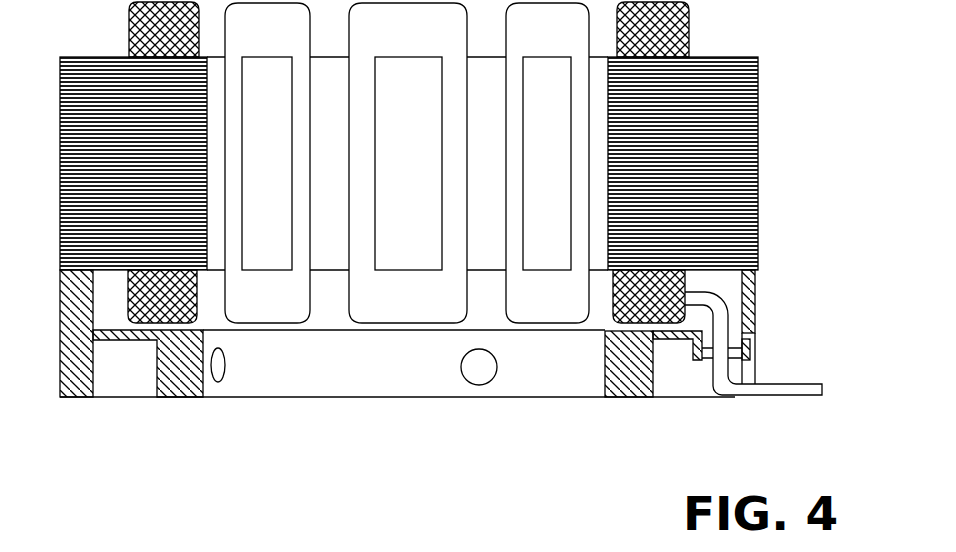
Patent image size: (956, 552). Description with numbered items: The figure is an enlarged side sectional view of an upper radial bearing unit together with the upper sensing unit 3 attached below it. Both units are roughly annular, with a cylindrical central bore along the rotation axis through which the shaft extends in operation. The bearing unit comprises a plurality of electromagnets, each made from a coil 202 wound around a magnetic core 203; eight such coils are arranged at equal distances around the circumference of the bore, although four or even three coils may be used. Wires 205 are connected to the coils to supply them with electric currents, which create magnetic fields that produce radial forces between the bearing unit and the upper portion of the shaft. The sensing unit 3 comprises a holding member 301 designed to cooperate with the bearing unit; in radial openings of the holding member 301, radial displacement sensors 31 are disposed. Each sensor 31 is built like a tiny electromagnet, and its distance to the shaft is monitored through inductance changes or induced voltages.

The upper sensing unit 3 is at (369, 433).
The radial displacement sensor 31 is at (226, 366).
The coil 202 is at (672, 35).
The magnetic core 203 is at (742, 166).
The wire 205 is at (772, 386).
The holding member 301 is at (627, 368).